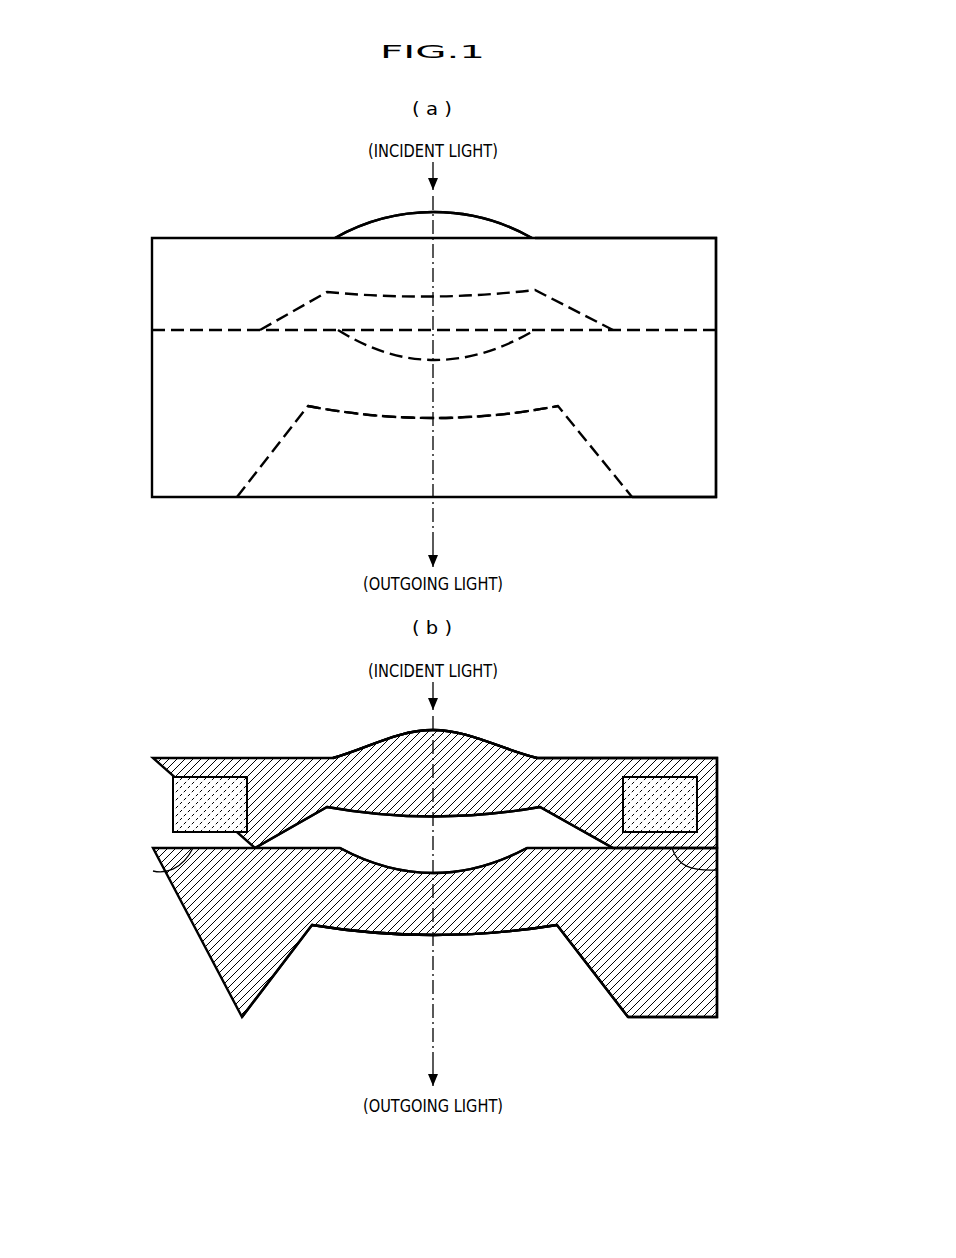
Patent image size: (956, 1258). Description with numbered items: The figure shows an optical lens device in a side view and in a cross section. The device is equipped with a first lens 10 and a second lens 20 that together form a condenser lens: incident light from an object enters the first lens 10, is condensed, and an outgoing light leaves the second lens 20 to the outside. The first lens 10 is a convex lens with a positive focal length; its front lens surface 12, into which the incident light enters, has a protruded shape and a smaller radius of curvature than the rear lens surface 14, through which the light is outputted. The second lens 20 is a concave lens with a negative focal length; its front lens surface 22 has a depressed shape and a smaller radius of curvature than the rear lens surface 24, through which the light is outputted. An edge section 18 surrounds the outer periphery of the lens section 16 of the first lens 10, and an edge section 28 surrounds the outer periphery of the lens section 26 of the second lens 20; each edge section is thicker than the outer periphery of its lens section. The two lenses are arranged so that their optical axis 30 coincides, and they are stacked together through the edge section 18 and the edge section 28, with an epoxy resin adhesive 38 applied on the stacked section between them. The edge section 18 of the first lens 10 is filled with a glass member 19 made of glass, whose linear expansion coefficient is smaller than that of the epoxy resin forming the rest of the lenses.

The first lens 10 is at (478, 202).
The lens surface 12 is at (358, 229).
The lens surface 14 is at (352, 295).
The lens section 16 is at (408, 232).
The edge section 18 is at (664, 252).
The glass member 19 is at (208, 803).
The second lens 20 is at (478, 510).
The lens surface 22 is at (358, 340).
The lens surface 24 is at (366, 416).
The lens section 26 is at (410, 392).
The edge section 28 is at (674, 495).
The optical axis 30 is at (437, 532).
The adhesive 38 is at (753, 883).